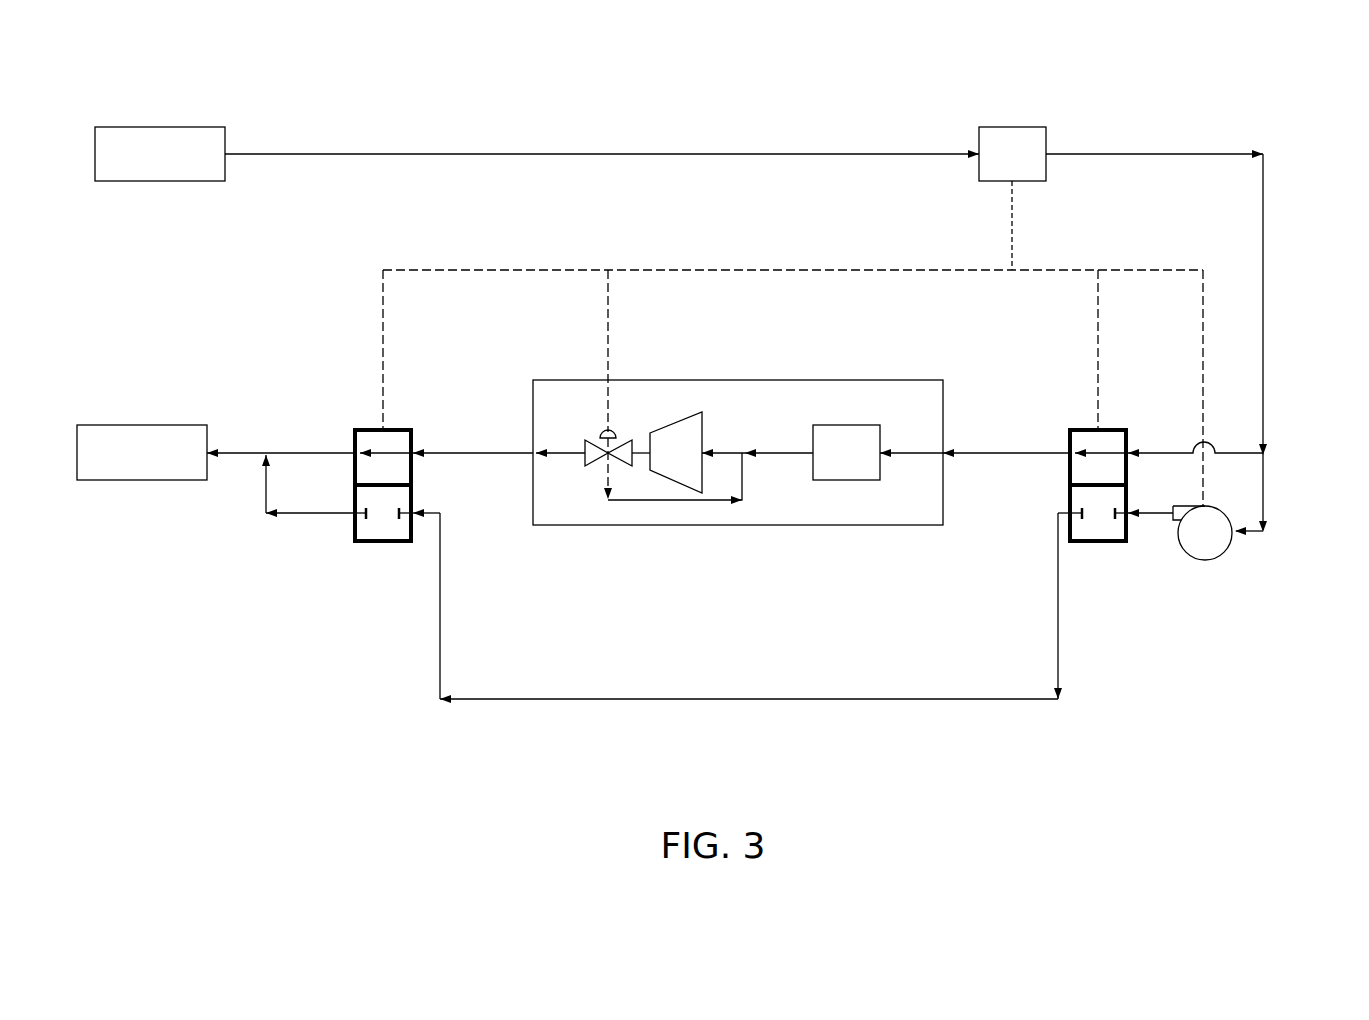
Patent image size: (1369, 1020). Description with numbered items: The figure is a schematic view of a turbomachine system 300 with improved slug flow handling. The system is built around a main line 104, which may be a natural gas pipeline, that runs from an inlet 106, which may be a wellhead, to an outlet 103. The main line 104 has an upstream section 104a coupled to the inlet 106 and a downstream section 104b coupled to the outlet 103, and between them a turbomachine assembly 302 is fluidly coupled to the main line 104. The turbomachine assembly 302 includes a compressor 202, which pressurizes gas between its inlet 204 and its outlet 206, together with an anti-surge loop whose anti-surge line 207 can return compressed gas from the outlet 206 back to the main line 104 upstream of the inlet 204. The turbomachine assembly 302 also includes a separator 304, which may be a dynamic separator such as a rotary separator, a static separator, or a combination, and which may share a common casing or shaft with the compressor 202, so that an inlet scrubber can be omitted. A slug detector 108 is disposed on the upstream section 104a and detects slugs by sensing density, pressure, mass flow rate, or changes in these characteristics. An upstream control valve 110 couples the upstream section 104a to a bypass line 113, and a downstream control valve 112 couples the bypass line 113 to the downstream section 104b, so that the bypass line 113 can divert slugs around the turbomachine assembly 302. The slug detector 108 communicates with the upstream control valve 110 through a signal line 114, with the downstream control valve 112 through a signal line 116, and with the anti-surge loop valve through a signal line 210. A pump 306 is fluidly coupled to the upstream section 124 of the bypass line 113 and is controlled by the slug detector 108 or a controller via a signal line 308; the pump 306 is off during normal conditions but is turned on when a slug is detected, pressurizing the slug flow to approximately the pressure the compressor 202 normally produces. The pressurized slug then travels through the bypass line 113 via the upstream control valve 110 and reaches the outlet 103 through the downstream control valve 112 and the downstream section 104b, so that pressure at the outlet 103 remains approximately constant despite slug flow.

The turbomachine system 300 is at (294, 76).
The outlet 103 is at (123, 468).
The main line 104 is at (440, 154).
The upstream section 104a is at (1263, 240).
The downstream section 104b is at (232, 450).
The inlet 106 is at (141, 170).
The slug detector 108 is at (993, 170).
The upstream control valve 110 is at (1100, 543).
The downstream control valve 112 is at (380, 532).
The bypass line 113 is at (787, 700).
The signal line 114 is at (803, 270).
The signal line 116 is at (1098, 352).
The upstream section of the bypass line 124 is at (1257, 536).
The compressor 202 is at (657, 468).
The inlet 204 is at (702, 450).
The outlet 206 is at (648, 452).
The anti-surge line 207 is at (650, 502).
The signal line 210 is at (608, 357).
The turbomachine assembly 302 is at (685, 525).
The separator 304 is at (827, 468).
The pump 306 is at (1210, 557).
The signal line 308 is at (1203, 398).